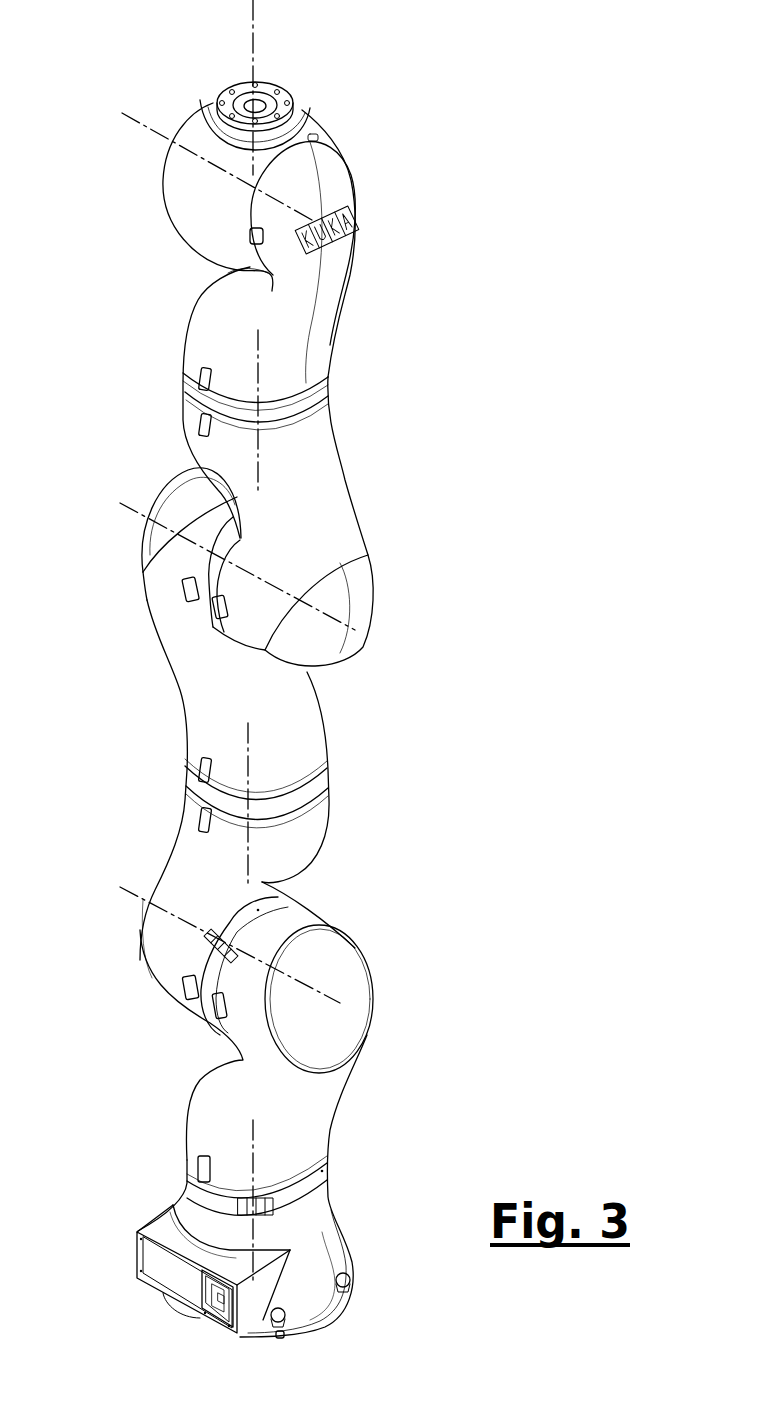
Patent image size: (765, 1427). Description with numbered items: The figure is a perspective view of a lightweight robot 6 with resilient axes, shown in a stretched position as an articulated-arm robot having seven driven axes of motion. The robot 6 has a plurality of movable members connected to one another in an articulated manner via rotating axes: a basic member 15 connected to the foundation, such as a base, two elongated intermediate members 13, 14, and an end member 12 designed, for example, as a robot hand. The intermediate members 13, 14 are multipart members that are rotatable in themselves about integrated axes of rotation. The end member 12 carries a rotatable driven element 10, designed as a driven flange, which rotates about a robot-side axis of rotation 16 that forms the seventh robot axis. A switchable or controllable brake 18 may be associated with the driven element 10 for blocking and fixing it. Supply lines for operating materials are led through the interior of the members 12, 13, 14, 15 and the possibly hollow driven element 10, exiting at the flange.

The robot 6 is at (320, 669).
The driven element 10 is at (222, 95).
The end member 12 is at (220, 193).
The intermediate member 13 is at (328, 497).
The intermediate member 14 is at (200, 737).
The basic member 15 is at (213, 1120).
The axis of rotation 16 is at (252, 17).
The brake 18 is at (303, 112).